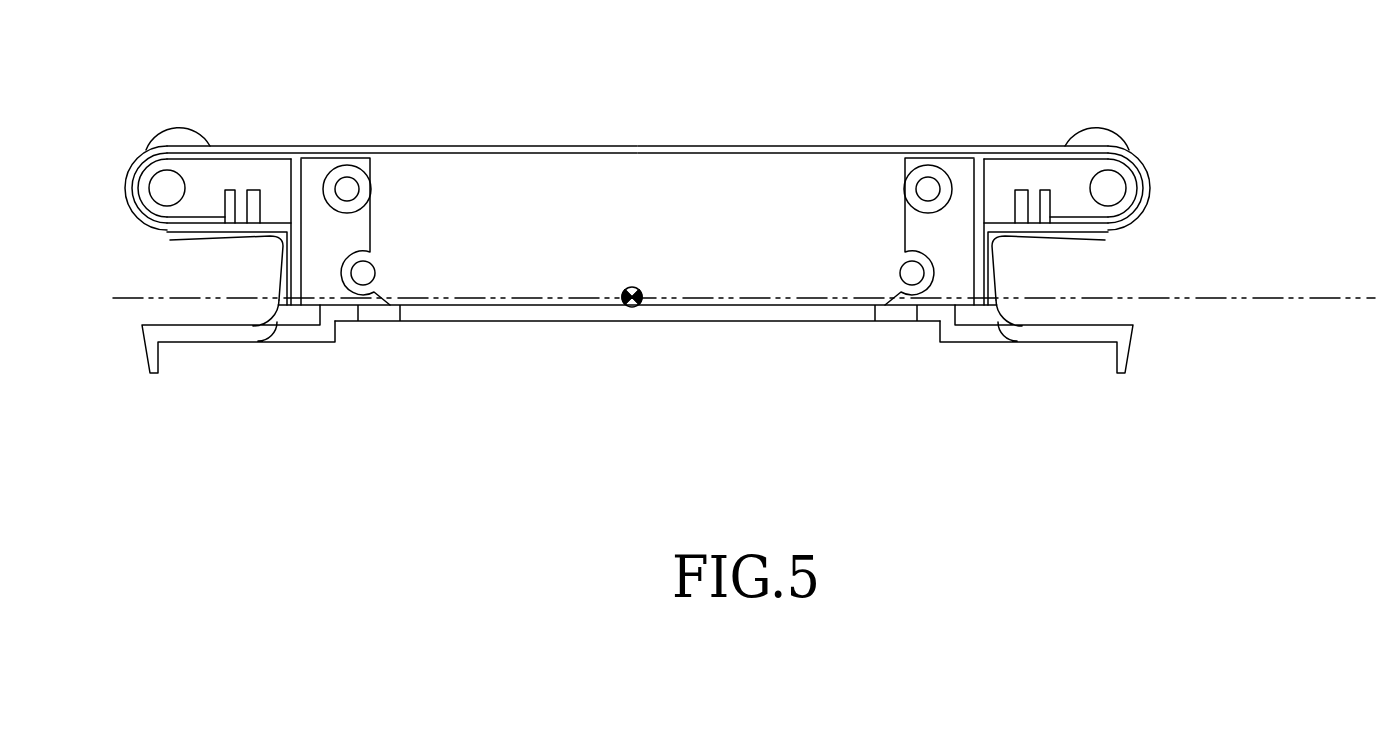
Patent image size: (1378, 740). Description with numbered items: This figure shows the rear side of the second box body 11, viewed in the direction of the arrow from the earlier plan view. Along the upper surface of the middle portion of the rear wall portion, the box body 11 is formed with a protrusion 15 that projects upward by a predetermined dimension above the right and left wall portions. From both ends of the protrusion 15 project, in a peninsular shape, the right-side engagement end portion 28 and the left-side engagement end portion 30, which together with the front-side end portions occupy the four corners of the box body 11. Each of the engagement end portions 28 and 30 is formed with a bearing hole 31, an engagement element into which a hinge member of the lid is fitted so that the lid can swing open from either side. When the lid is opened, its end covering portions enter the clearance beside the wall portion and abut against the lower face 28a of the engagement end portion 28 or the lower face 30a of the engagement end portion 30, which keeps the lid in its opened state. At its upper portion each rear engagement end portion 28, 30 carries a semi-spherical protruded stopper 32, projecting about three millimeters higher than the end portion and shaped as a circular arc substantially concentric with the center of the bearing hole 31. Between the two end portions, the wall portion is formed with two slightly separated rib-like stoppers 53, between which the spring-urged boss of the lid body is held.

The second box body 11 is at (1243, 307).
The protrusion 15 is at (616, 328).
The right-side engagement end portion 28 is at (140, 156).
The lower face 28a is at (190, 233).
The left-side engagement end portion 30 is at (1138, 157).
The lower face 30a is at (1087, 233).
The bearing hole 31 is at (178, 183).
The semi-spherical protruded stopper 32 is at (182, 135).
The rib-like stoppers 53 is at (1043, 189).